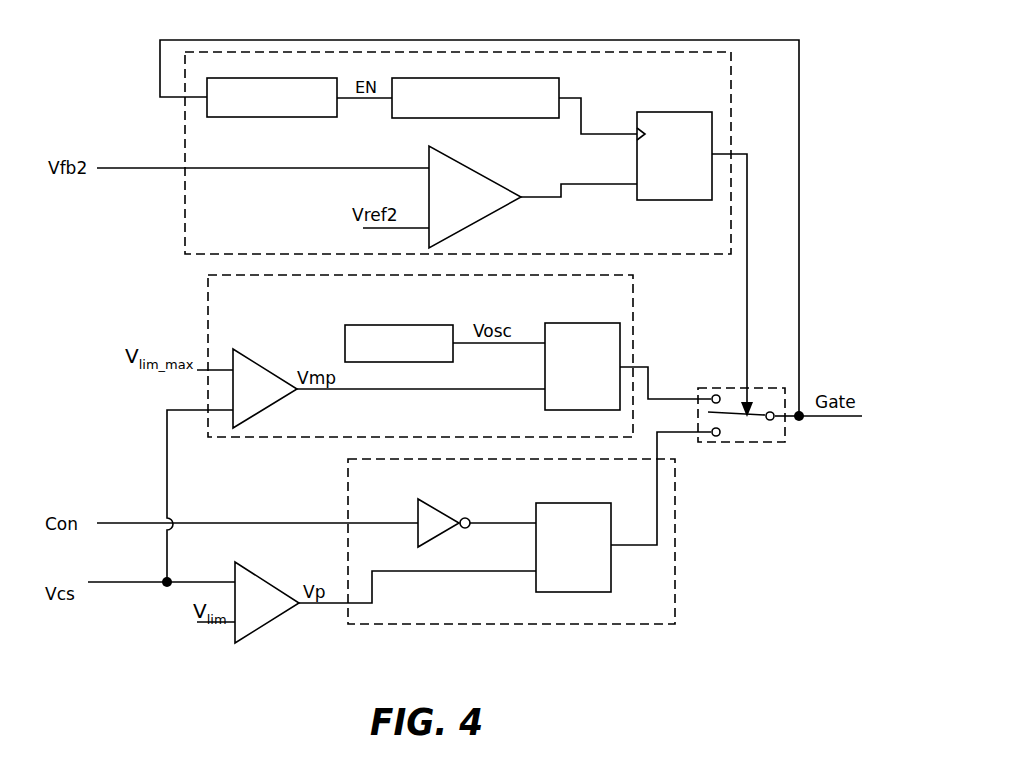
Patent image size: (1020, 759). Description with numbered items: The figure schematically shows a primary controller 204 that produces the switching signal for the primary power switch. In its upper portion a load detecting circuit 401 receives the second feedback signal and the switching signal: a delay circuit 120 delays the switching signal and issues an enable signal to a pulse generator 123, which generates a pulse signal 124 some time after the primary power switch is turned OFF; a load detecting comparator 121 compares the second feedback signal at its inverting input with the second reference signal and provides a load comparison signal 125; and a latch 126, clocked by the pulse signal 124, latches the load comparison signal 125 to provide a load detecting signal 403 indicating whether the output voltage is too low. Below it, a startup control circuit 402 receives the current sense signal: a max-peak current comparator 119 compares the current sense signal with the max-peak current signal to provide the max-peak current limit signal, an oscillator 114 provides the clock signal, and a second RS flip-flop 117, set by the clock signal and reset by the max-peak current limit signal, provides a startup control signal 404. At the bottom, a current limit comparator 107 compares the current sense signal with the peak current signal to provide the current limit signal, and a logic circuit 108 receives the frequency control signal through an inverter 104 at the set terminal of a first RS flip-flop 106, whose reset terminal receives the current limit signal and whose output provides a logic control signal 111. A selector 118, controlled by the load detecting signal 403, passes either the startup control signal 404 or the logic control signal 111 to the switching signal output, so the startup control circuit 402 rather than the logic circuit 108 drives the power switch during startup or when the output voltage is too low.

The primary controller 204 is at (63, 108).
The delay circuit 120 is at (292, 118).
The pulse generator 123 is at (562, 83).
The load detecting comparator 121 is at (497, 182).
The pulse signal 124 is at (598, 116).
The load comparison signal 125 is at (579, 180).
The latch 126 is at (668, 111).
The load detecting circuit 401 is at (732, 106).
The oscillator 114 is at (367, 320).
The second RS flip-flop 117 is at (587, 323).
The max-peak current comparator 119 is at (252, 337).
The startup control circuit 402 is at (633, 313).
The load detecting signal 403 is at (732, 285).
The startup control signal 404 is at (665, 383).
The selector 118 is at (730, 387).
The inverter 104 is at (445, 505).
The first RS flip-flop 106 is at (578, 503).
The logic control signal 111 is at (661, 488).
The current limit comparator 107 is at (270, 623).
The logic circuit 108 is at (635, 625).